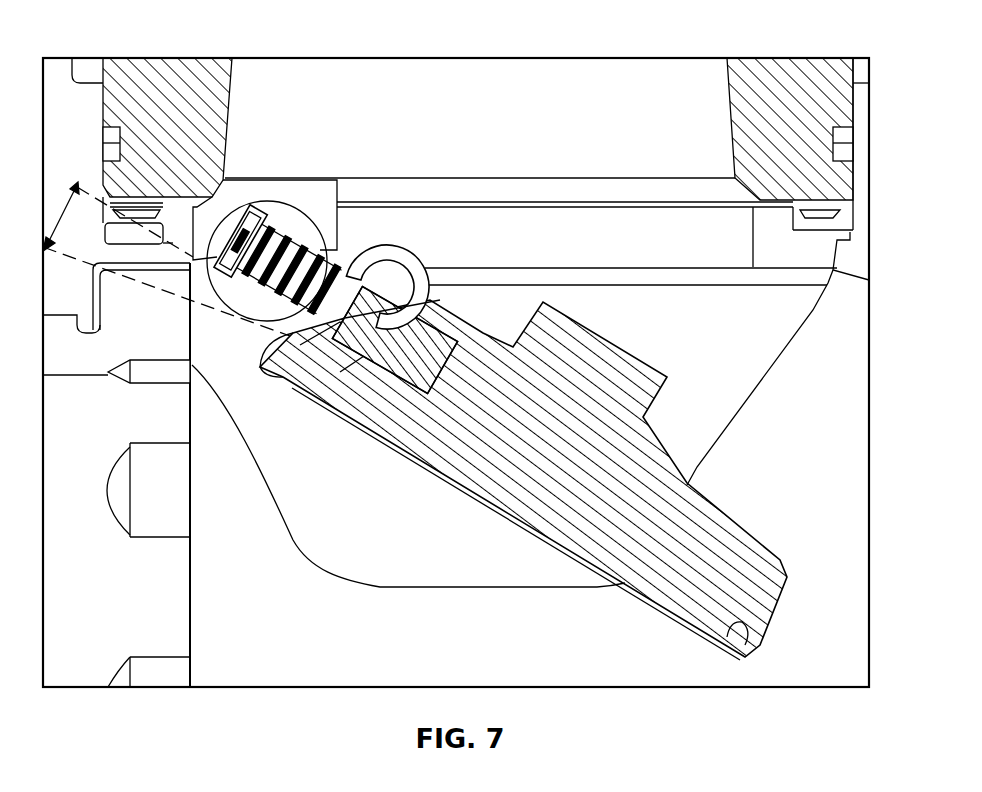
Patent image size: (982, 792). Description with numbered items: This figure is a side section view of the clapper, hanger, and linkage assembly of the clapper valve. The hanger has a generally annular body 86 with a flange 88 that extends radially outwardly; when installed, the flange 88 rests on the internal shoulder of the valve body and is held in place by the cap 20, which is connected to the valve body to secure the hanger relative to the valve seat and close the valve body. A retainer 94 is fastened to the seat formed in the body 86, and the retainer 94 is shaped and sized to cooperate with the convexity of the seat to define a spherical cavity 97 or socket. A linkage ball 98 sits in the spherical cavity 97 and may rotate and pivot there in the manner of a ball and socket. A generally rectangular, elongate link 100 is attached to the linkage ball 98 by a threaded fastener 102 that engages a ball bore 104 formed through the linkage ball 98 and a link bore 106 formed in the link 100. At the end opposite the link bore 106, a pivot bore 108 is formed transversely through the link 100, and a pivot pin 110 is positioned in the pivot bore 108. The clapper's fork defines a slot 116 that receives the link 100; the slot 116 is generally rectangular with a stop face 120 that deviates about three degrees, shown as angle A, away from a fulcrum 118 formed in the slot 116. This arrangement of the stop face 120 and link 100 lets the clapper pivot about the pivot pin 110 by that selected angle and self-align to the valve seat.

The cap 20 is at (823, 112).
The annular body 86 is at (205, 232).
The flange 88 is at (100, 230).
The retainer 94 is at (325, 190).
The spherical cavity 97 is at (212, 222).
The linkage ball 98 is at (302, 238).
The link 100 is at (450, 317).
The threaded fastener 102 is at (266, 250).
The ball bore 104 is at (300, 232).
The link bore 106 is at (355, 322).
The pivot bore 108 is at (385, 340).
The pivot pin 110 is at (358, 335).
The slot 116 is at (458, 360).
The fulcrum 118 is at (352, 340).
The stop face 120 is at (290, 334).